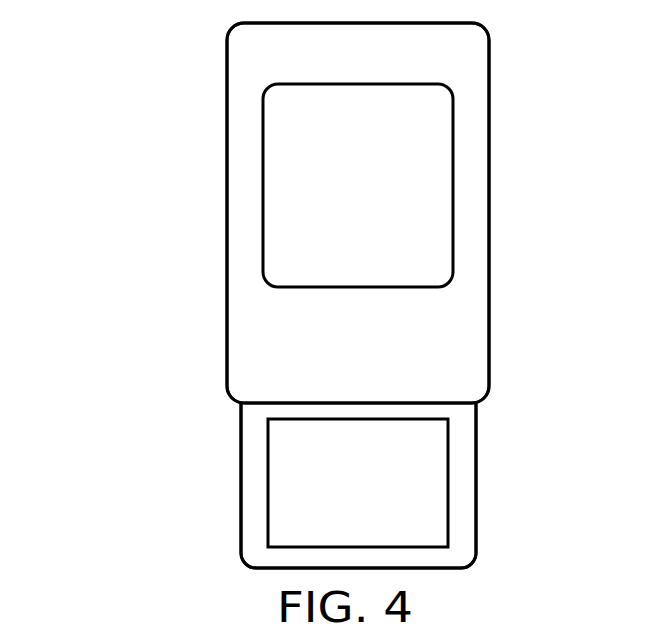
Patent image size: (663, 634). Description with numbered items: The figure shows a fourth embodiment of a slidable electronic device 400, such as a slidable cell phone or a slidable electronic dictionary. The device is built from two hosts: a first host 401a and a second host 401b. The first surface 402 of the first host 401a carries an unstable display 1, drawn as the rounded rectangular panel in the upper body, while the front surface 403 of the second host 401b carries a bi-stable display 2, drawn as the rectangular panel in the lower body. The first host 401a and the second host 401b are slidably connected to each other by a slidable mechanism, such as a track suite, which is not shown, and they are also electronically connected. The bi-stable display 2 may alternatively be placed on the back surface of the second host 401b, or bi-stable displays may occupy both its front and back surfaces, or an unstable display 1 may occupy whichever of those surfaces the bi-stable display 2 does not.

The electronic device 400 is at (56, 470).
The first host 401a is at (230, 222).
The first surface 402 is at (240, 255).
The unstable display 1 is at (325, 200).
The front surface 403 is at (458, 462).
The second host 401b is at (477, 508).
The bi-stable display 2 is at (365, 499).